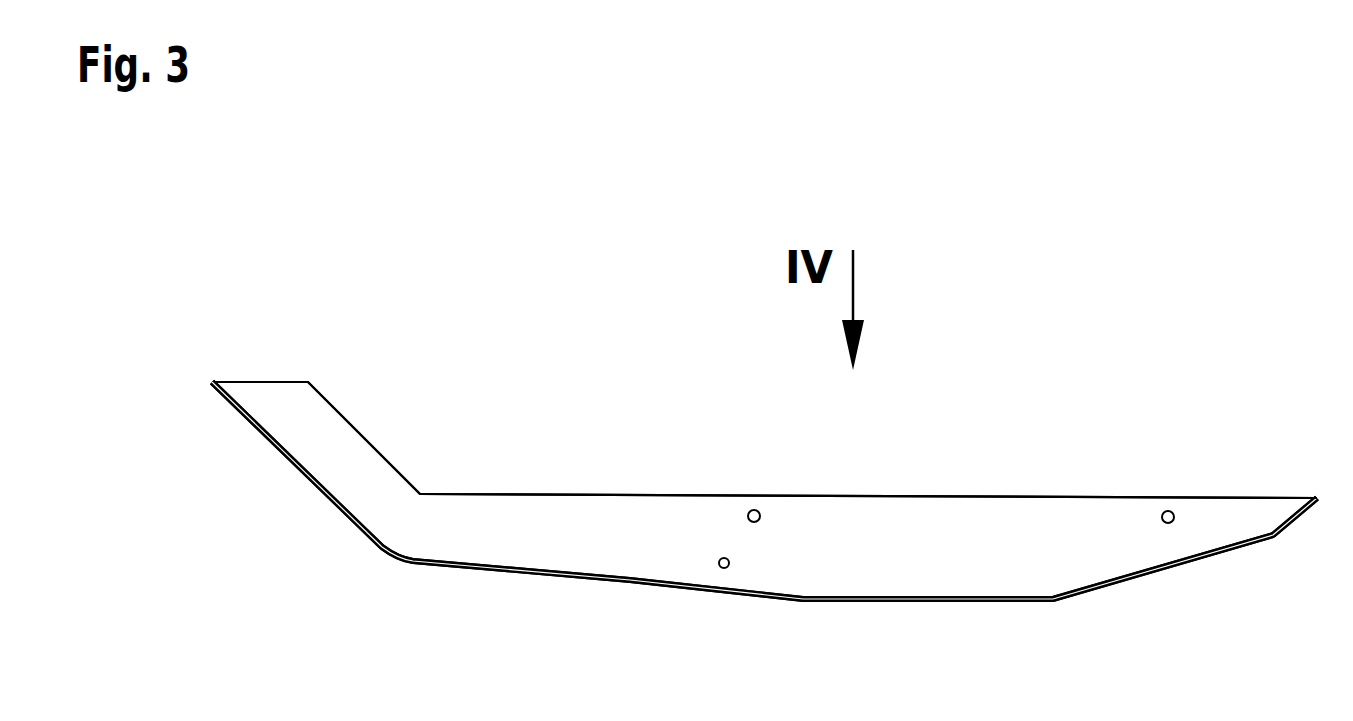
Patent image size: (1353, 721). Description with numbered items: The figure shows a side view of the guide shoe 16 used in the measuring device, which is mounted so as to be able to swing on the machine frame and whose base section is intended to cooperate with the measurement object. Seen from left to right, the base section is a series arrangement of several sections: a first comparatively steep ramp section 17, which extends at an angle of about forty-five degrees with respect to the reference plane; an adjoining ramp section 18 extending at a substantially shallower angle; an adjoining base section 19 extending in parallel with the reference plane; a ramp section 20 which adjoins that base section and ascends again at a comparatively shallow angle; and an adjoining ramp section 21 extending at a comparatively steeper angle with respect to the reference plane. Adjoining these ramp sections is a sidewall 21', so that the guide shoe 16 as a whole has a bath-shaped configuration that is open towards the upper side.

The guide shoe 16 is at (590, 428).
The first ramp section 17 is at (306, 485).
The ramp section 18 is at (487, 572).
The base section 19 is at (796, 599).
The ramp section 20 is at (1163, 574).
The ramp section 21 is at (1309, 550).
The sidewall 21' is at (868, 462).